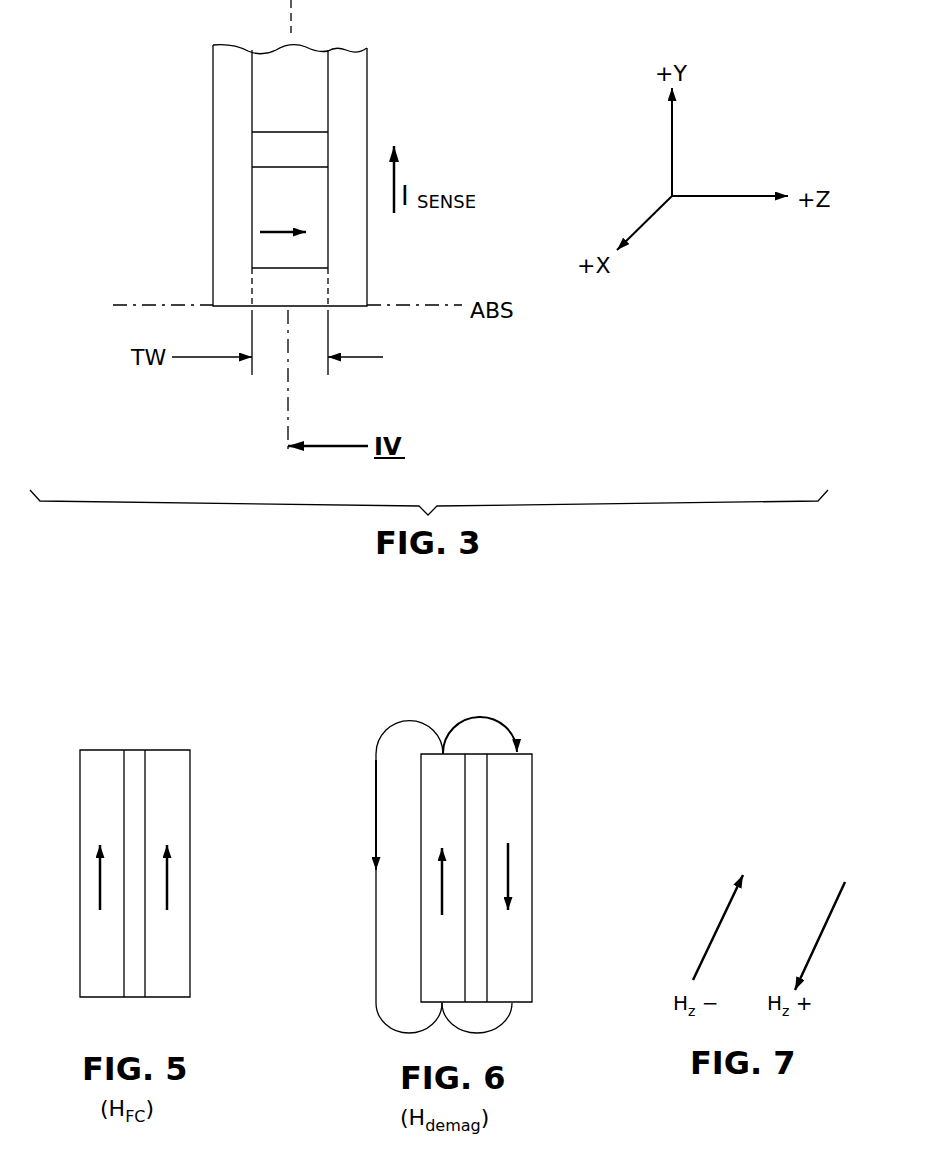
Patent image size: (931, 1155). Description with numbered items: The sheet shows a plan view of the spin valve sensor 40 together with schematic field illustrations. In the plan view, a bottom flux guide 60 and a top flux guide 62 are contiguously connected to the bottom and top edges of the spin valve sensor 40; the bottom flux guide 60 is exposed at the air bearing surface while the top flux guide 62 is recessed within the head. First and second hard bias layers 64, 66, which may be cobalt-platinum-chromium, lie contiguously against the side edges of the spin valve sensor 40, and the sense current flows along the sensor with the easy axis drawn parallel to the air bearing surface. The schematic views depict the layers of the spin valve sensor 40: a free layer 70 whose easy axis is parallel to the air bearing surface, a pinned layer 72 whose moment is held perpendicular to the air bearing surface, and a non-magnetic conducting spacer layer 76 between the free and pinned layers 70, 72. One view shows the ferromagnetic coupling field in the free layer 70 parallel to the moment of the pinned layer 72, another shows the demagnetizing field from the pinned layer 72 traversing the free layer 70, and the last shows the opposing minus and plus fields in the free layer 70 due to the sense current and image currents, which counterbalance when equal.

In FIG. 3, the spin valve sensor 40 is at (252, 229).
In FIG. 3, the bottom flux guide 60 is at (317, 289).
In FIG. 3, the top flux guide 62 is at (257, 152).
In FIG. 3, the first hard bias layer 64 is at (367, 255).
In FIG. 3, the second hard bias layer 66 is at (225, 103).
In FIG. 5, the free layer 70 is at (178, 783).
In FIG. 6, the free layer 70 is at (517, 783).
In FIG. 5, the pinned layer 72 is at (88, 797).
In FIG. 6, the pinned layer 72 is at (430, 815).
In FIG. 5, the spacer layer 76 is at (135, 755).
In FIG. 6, the spacer layer 76 is at (480, 823).